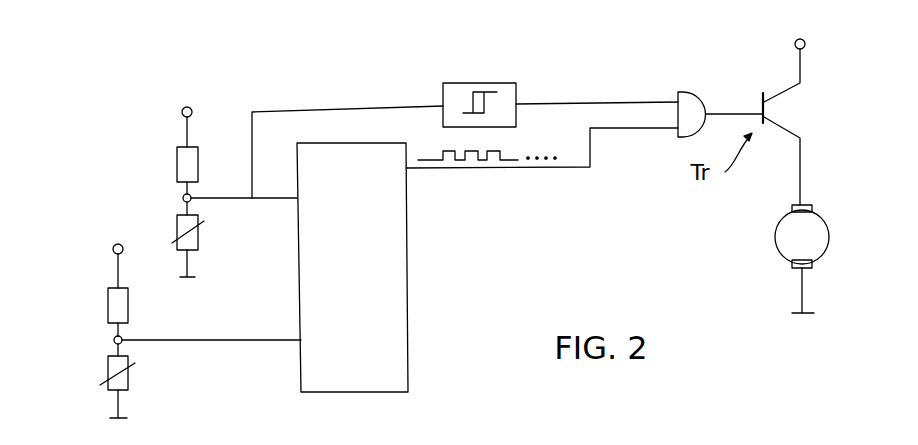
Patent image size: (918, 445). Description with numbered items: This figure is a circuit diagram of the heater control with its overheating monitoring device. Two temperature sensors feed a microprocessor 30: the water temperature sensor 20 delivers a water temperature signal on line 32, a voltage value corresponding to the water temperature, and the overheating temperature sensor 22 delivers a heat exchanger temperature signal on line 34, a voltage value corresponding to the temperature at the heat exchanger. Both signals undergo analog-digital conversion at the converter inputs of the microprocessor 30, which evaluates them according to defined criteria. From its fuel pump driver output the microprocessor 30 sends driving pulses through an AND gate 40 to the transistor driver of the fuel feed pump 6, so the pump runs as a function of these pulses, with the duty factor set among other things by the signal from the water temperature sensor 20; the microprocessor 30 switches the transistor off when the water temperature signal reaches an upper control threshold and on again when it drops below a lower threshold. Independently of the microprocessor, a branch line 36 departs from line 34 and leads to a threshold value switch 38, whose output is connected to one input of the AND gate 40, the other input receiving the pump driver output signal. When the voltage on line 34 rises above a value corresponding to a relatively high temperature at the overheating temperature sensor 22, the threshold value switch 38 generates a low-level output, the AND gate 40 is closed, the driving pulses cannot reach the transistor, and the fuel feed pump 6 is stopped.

The fuel feed pump 6 is at (827, 220).
The water temperature sensor 20 is at (108, 360).
The overheating temperature sensor 22 is at (175, 222).
The microprocessor 30 is at (390, 297).
The line carrying WRT signal 32 is at (238, 343).
The line carrying UFT signal 34 is at (220, 195).
The branch line 36 is at (352, 105).
The threshold value switch 38 is at (480, 82).
The AND gate 40 is at (690, 100).